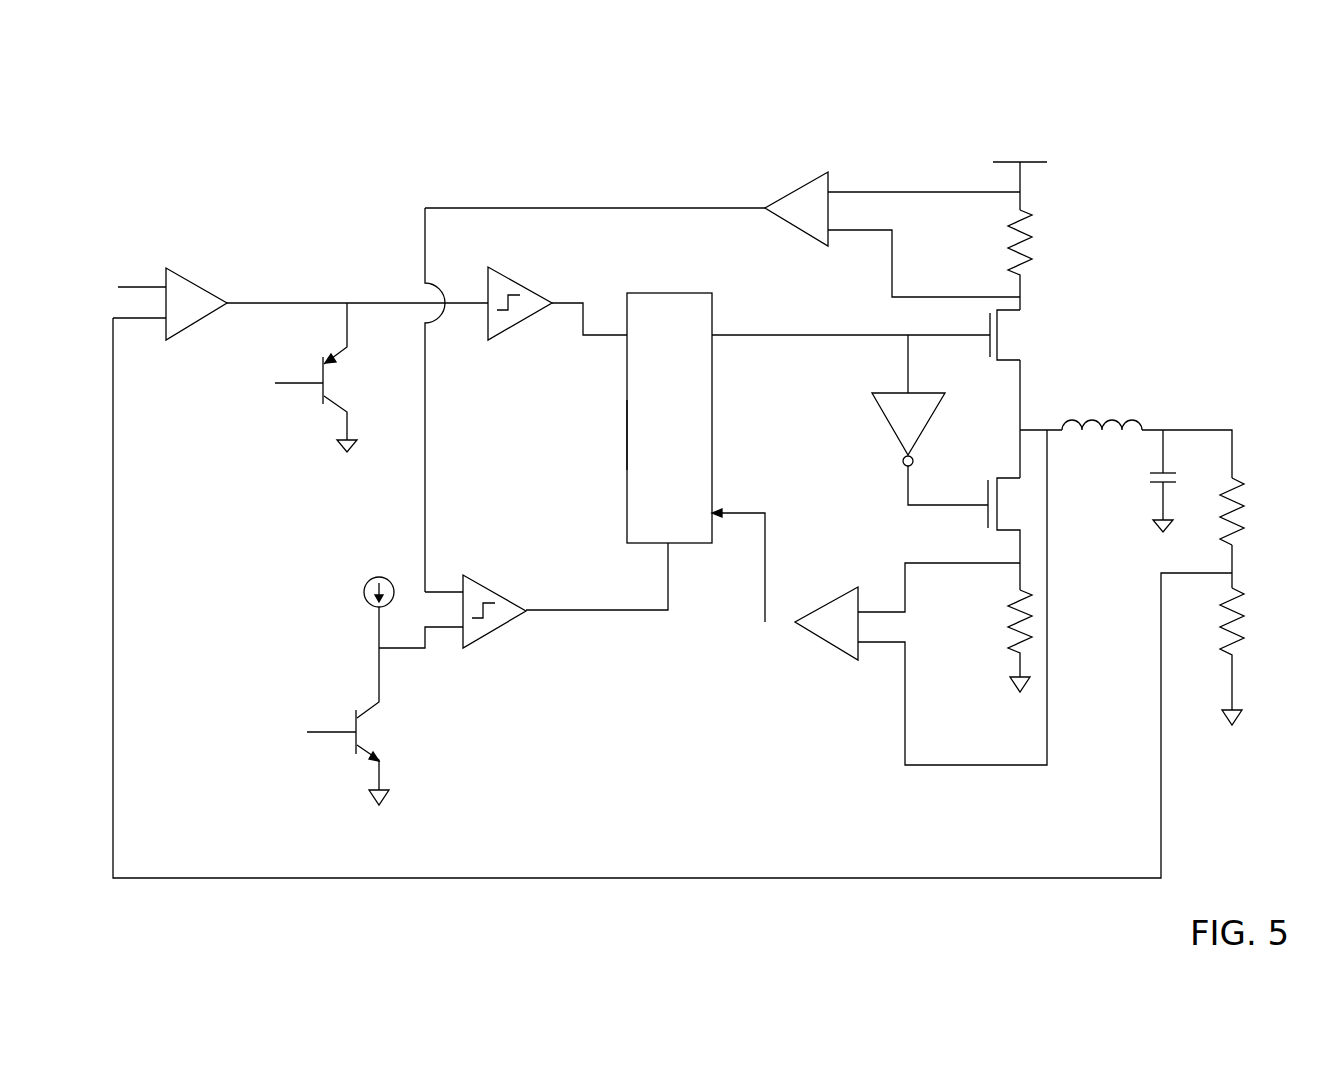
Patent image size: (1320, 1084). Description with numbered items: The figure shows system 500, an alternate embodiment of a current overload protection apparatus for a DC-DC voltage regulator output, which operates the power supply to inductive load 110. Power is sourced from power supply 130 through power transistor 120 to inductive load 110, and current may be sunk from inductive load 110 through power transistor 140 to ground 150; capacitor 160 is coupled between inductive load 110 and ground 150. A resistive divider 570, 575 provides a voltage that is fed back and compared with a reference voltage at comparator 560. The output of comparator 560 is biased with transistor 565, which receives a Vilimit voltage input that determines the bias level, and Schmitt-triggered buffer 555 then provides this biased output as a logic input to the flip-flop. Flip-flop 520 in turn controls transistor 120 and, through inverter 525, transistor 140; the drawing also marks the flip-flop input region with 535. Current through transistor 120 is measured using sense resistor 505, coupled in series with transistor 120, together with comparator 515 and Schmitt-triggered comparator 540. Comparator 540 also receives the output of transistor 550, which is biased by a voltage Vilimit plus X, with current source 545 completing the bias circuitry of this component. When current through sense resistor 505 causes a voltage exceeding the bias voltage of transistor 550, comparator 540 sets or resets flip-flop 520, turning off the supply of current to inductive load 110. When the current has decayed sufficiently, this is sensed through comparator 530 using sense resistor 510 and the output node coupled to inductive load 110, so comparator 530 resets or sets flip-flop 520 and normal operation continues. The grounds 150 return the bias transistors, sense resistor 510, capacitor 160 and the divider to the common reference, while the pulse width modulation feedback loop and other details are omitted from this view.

The system 500 is at (333, 178).
The comparator 560 is at (209, 292).
The transistor 565 is at (350, 372).
The Schmitt-triggered buffer 555 is at (552, 352).
The flip-flop 520 is at (661, 290).
The latch input 535 is at (607, 420).
The Schmitt-triggered comparator 540 is at (470, 640).
The current source 545 is at (366, 578).
The transistor 550 is at (373, 722).
The comparator 515 is at (818, 220).
The power supply 130 is at (1048, 160).
The sense resistor 505 is at (1043, 232).
The power transistor 120 is at (1017, 335).
The inverter 525 is at (930, 424).
The power transistor 140 is at (1016, 534).
The sense resistor 510 is at (995, 628).
The comparator 530 is at (852, 636).
The inductive load 110 is at (1103, 418).
The capacitor 160 is at (1148, 483).
The resistive divider 570 is at (1239, 491).
The resistive divider 575 is at (1239, 603).
The ground 150 is at (336, 454).